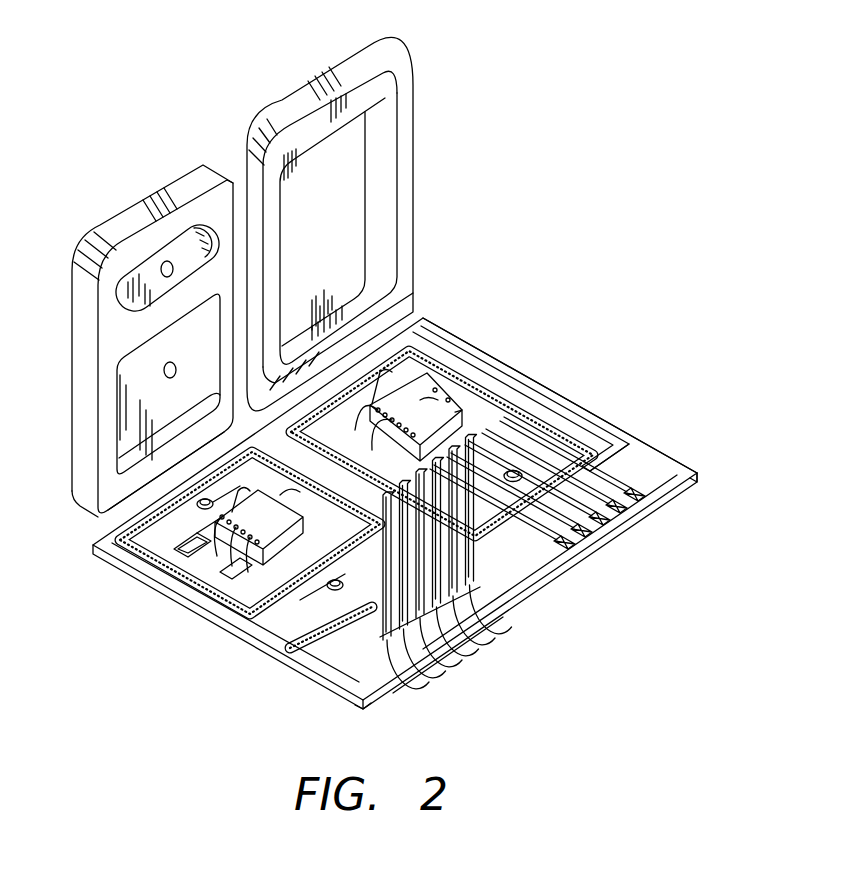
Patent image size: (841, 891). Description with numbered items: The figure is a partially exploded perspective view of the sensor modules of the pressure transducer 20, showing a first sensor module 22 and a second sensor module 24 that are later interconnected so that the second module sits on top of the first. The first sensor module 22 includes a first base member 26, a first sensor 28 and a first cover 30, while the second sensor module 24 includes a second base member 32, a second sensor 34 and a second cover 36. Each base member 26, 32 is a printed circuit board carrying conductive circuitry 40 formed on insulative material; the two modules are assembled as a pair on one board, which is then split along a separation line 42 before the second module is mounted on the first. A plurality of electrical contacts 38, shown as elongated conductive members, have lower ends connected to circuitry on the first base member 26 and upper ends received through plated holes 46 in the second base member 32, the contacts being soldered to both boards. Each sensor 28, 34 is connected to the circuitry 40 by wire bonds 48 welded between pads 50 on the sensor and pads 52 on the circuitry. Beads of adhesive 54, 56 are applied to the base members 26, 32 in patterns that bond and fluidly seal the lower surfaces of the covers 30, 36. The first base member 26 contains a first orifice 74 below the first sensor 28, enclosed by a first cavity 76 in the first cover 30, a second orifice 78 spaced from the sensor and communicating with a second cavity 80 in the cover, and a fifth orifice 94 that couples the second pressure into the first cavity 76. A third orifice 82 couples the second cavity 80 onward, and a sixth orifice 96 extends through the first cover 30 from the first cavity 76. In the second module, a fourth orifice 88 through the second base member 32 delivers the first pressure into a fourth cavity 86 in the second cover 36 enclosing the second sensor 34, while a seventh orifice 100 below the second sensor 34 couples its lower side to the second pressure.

The pressure transducer 20 is at (593, 261).
The first sensor module 22 is at (187, 606).
The second sensor module 24 is at (530, 367).
The first base member 26 is at (366, 706).
The first sensor 28 is at (290, 545).
The first cover 30 is at (124, 308).
The second base member 32 is at (700, 474).
The second sensor 34 is at (432, 404).
The second cover 36 is at (357, 224).
The electrical contacts 38 is at (482, 612).
The conductive circuitry 40 is at (637, 452).
The separation line 42 is at (492, 572).
The plated holes 46 is at (633, 510).
The wire bonds 48 is at (482, 352).
The pads on the sensor 50 is at (408, 375).
The pads on the circuitry 52 is at (455, 392).
The bead of adhesive 54 is at (318, 588).
The bead of adhesive 56 is at (580, 424).
The first orifice 74 is at (150, 457).
The first cavity 76 is at (130, 413).
The second orifice 78 is at (330, 632).
The second cavity 80 is at (187, 250).
The third orifice 82 is at (165, 263).
The fourth cavity 86 is at (333, 243).
The fourth orifice 88 is at (520, 466).
The fifth orifice 94 is at (200, 508).
The sixth orifice 96 is at (165, 368).
The seventh orifice 100 is at (462, 422).